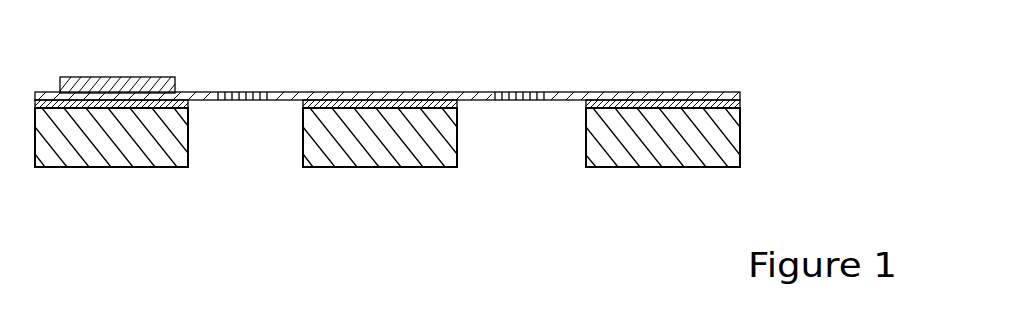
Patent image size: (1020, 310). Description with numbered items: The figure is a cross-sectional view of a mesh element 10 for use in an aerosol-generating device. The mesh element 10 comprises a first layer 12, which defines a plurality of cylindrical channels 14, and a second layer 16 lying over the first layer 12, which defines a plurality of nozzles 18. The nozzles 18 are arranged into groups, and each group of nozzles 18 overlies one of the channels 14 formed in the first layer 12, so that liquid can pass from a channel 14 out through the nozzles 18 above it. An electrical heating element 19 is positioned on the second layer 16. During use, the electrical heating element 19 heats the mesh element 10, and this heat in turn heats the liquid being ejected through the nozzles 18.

The mesh element 10 is at (762, 53).
The first layer 12 is at (112, 167).
The cylindrical channels 14 is at (252, 137).
The second layer 16 is at (650, 92).
The nozzles 18 is at (275, 80).
The electrical heating element 19 is at (118, 77).